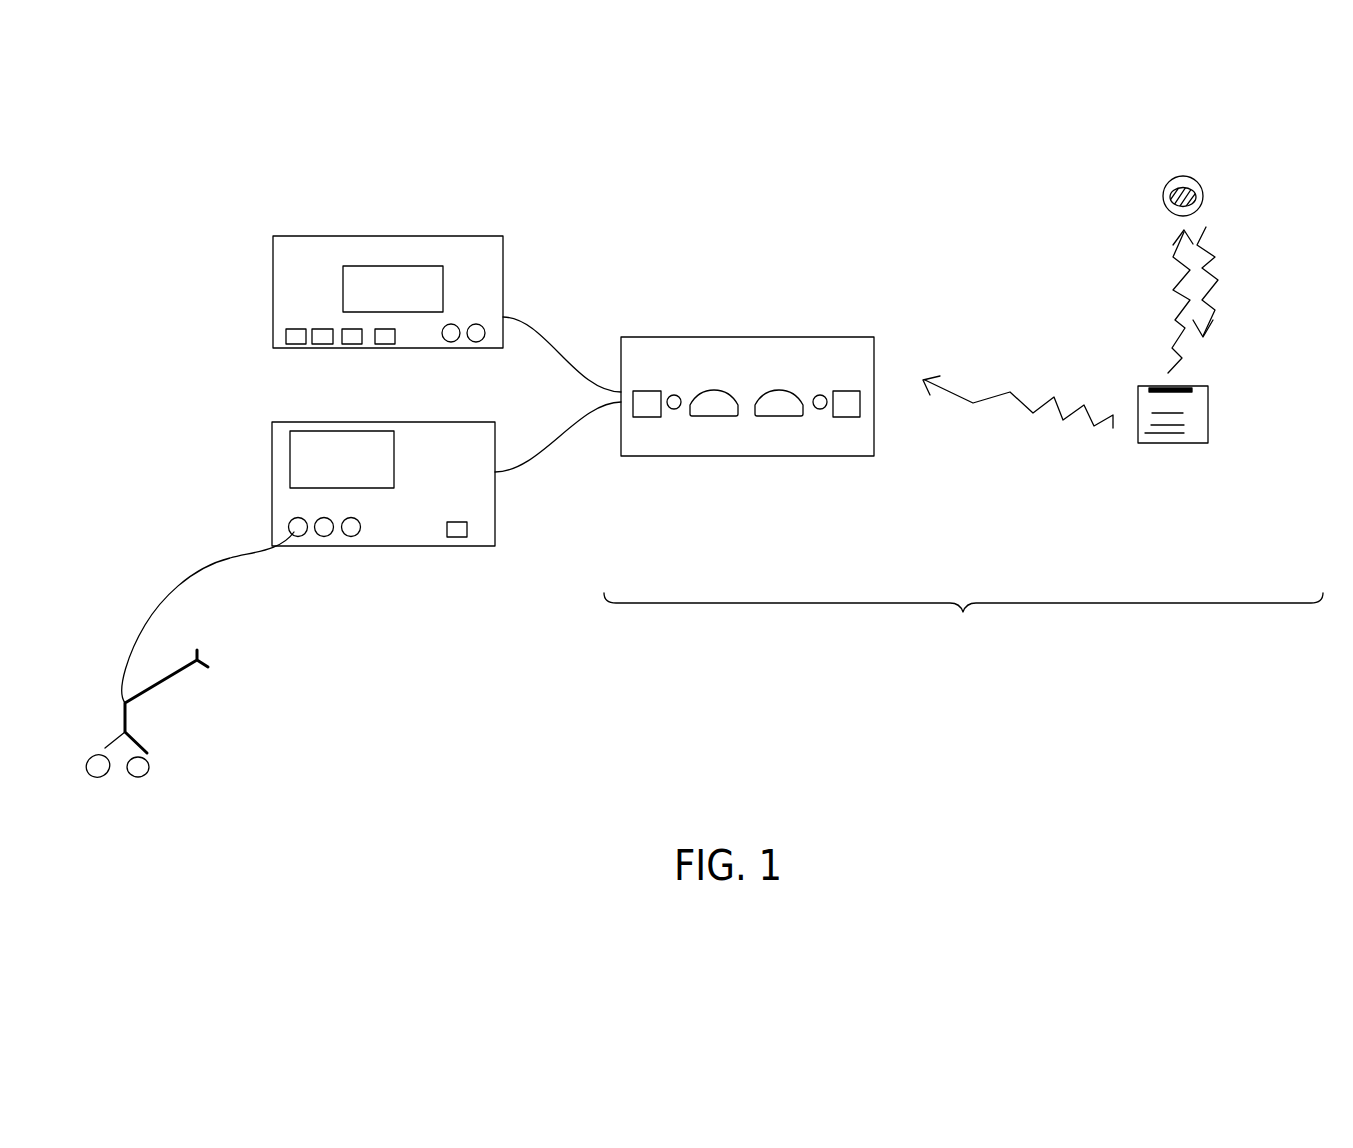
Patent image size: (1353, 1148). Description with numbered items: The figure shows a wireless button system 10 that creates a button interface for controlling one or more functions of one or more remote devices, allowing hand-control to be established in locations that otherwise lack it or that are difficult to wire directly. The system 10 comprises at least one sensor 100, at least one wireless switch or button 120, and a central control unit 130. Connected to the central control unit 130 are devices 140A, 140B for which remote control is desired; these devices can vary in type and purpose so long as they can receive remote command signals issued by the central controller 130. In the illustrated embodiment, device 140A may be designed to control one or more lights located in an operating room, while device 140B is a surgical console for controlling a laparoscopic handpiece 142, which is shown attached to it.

The wireless button system 10 is at (963, 619).
The sensor 100 is at (1192, 455).
The wireless switch or button 120 is at (1212, 173).
The central control unit 130 is at (764, 331).
The device 140A is at (347, 229).
The device 140B is at (286, 419).
The laparoscopic handpiece 142 is at (152, 775).